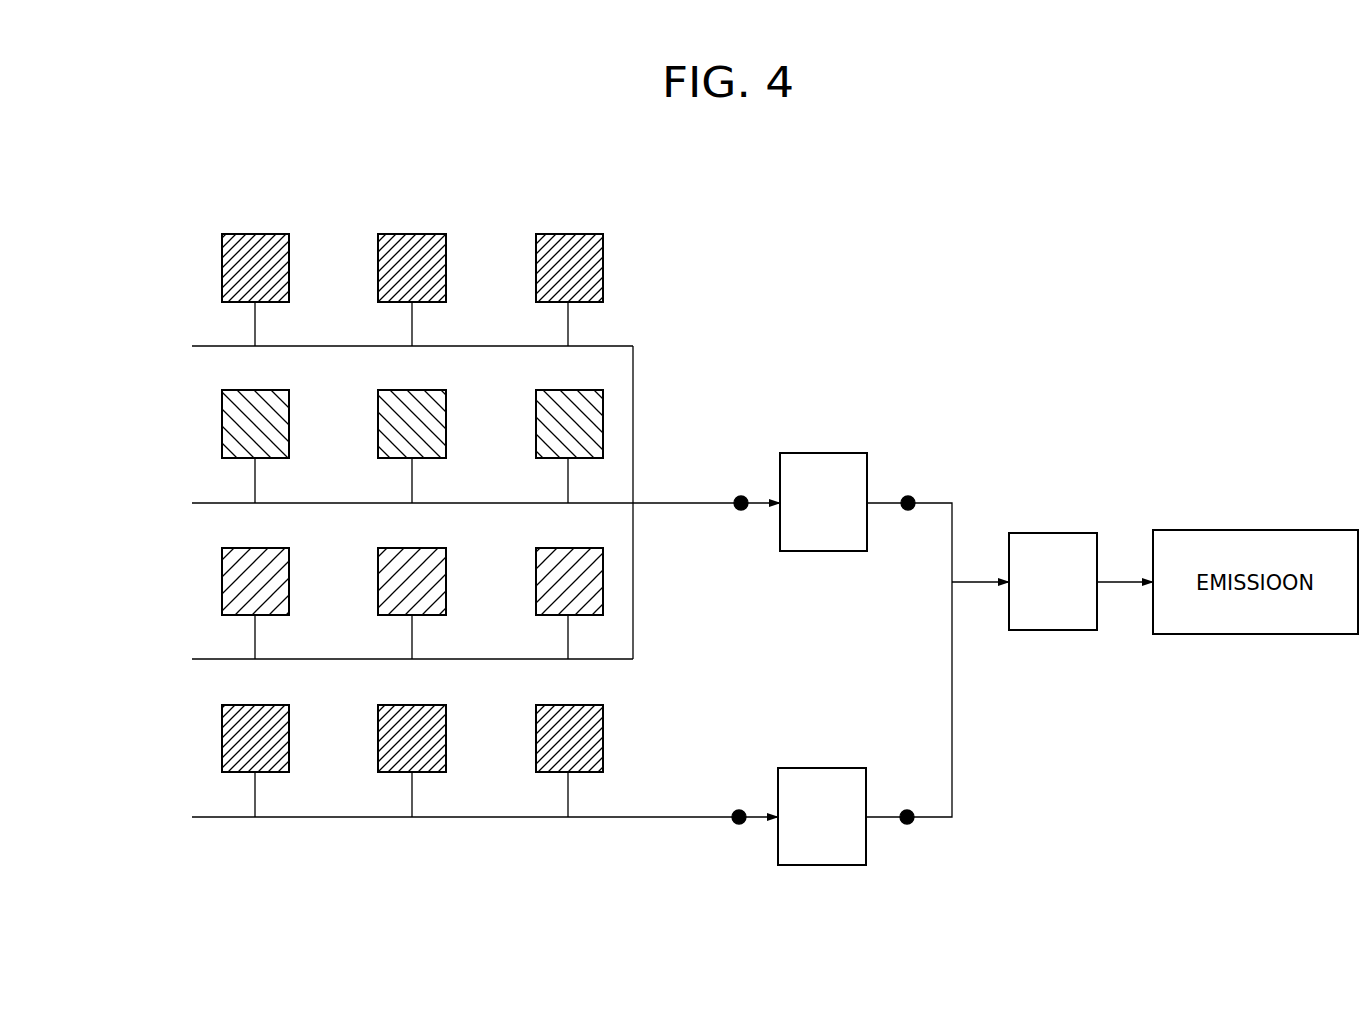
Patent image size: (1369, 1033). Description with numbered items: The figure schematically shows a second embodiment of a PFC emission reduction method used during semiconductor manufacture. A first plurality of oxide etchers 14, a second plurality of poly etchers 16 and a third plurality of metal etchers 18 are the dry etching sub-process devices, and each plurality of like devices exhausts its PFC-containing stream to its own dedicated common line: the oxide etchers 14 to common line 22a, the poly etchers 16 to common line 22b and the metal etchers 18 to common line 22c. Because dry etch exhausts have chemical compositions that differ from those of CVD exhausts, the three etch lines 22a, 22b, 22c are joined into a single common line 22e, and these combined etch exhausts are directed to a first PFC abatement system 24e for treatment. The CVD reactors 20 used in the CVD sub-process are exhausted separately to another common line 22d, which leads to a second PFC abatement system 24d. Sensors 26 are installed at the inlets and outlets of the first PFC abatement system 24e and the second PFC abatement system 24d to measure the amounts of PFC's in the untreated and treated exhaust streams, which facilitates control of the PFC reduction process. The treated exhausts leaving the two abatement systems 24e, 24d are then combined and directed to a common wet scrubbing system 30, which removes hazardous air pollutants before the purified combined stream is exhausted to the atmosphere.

The oxide etchers 14 is at (250, 234).
The poly etchers 16 is at (289, 422).
The metal etchers 18 is at (289, 579).
The CVD reactors 20 is at (289, 737).
The common line 22a is at (195, 345).
The common line 22b is at (195, 502).
The common line 22c is at (195, 658).
The common line 22d is at (195, 816).
The common line 22e is at (682, 502).
The second PFC abatement system 24d is at (811, 768).
The first PFC abatement system 24e is at (811, 453).
The sensors 26 is at (741, 496).
The wet scrubbing system 30 is at (1045, 532).